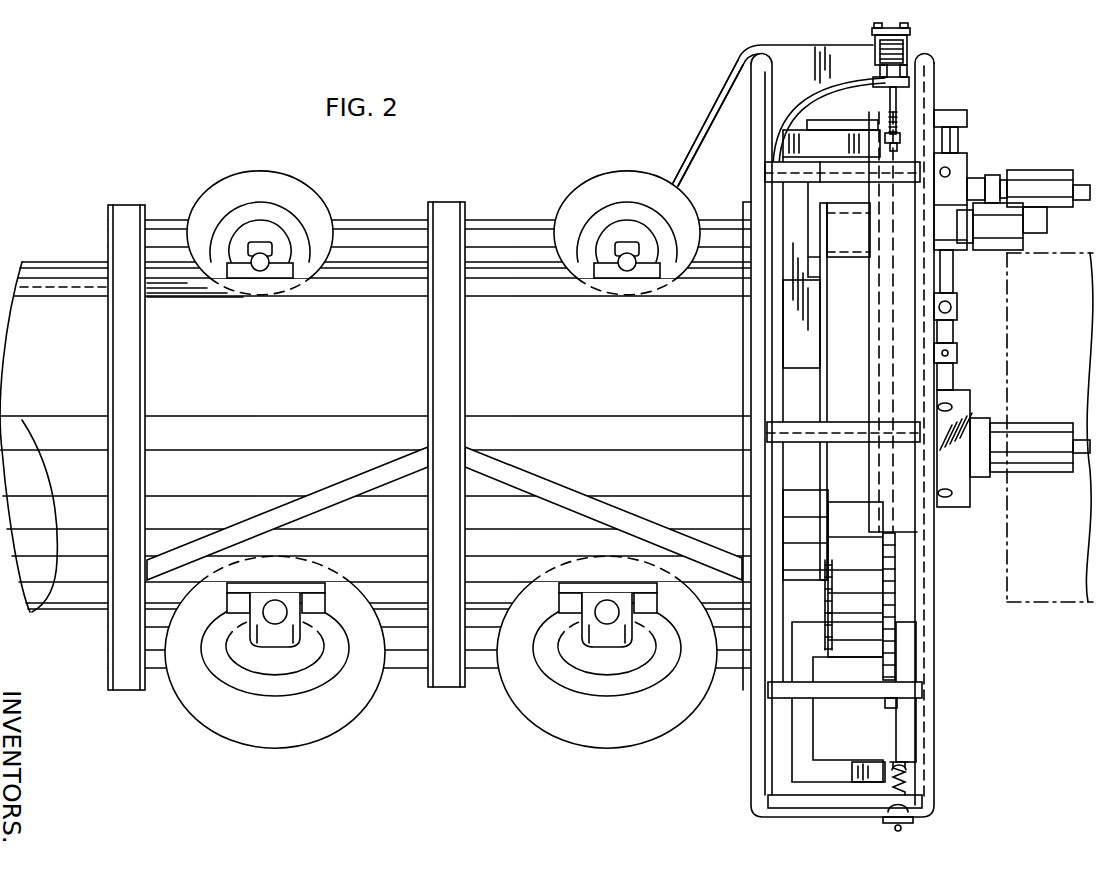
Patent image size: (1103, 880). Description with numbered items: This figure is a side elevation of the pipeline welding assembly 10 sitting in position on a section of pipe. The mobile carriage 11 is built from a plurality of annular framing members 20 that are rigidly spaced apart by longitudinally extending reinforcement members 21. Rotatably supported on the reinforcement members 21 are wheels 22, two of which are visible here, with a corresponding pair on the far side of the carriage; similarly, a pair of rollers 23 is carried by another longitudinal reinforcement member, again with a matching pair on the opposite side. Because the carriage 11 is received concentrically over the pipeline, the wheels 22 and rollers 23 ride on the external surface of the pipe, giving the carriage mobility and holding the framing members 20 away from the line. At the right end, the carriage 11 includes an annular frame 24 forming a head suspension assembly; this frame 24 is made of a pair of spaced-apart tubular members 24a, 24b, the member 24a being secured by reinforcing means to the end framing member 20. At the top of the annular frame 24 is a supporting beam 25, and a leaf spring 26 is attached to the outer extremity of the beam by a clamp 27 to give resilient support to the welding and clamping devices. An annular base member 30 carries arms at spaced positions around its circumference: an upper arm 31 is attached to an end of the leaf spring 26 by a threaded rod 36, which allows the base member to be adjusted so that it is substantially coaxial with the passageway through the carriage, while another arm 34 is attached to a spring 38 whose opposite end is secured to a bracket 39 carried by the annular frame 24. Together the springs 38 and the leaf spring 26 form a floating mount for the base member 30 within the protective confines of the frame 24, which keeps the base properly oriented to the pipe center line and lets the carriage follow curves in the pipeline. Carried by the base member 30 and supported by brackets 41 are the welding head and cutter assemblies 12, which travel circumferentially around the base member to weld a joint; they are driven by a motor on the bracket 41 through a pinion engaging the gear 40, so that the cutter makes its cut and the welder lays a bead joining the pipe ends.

The assembly 10 is at (1010, 86).
The mobile carriage 11 is at (499, 213).
The welding heads 12 is at (1030, 170).
The annular framing members 20 is at (126, 213).
The reinforcement members 21 is at (512, 425).
The wheels 22 is at (240, 728).
The rollers 23 is at (300, 196).
The annular frame 24 is at (753, 772).
The tubular member 24a is at (765, 720).
The tubular member 24b is at (928, 742).
The supporting beam 25 is at (718, 124).
The leaf spring 26 is at (892, 42).
The clamp 27 is at (912, 29).
The annular base member 30 is at (907, 573).
The upper arm 31 is at (790, 302).
The arm 34 is at (897, 743).
The rod 36 is at (888, 91).
The springs 38 is at (910, 785).
The brackets 39 is at (930, 821).
The gear 40 is at (887, 705).
The brackets 41 is at (876, 328).